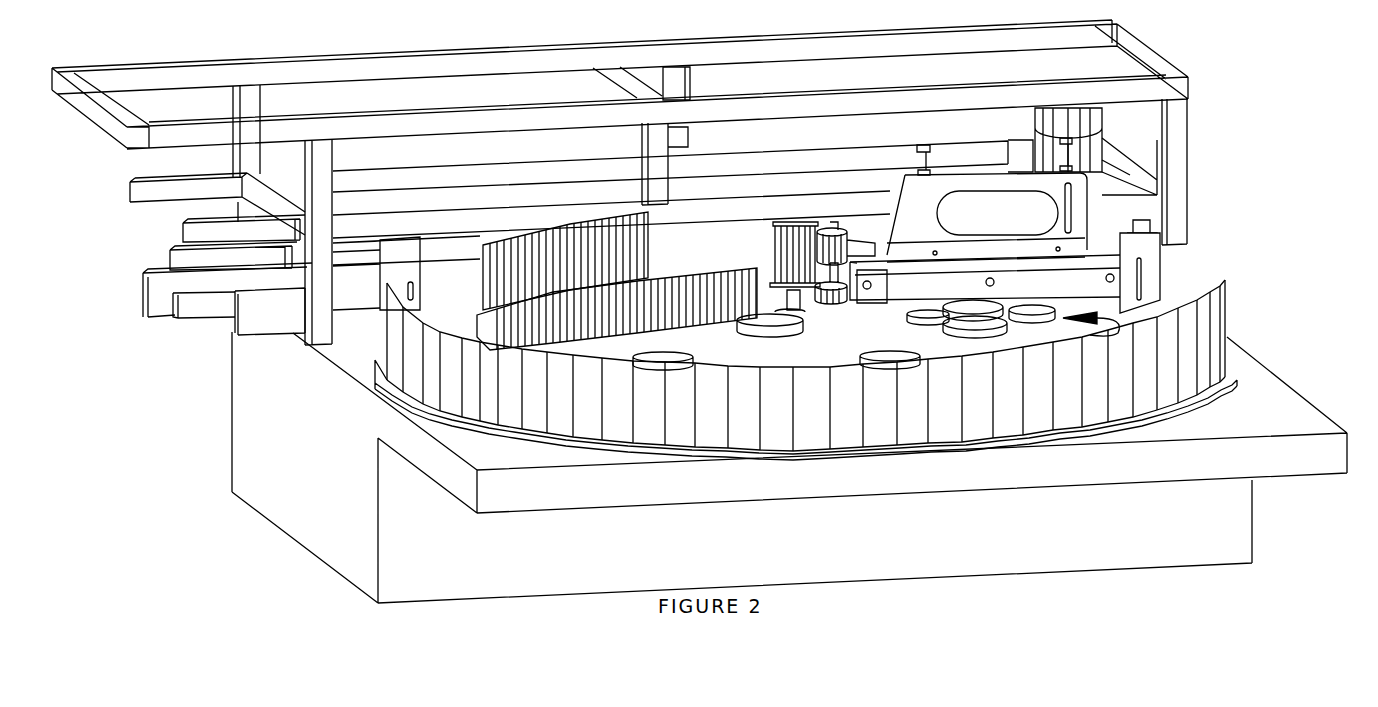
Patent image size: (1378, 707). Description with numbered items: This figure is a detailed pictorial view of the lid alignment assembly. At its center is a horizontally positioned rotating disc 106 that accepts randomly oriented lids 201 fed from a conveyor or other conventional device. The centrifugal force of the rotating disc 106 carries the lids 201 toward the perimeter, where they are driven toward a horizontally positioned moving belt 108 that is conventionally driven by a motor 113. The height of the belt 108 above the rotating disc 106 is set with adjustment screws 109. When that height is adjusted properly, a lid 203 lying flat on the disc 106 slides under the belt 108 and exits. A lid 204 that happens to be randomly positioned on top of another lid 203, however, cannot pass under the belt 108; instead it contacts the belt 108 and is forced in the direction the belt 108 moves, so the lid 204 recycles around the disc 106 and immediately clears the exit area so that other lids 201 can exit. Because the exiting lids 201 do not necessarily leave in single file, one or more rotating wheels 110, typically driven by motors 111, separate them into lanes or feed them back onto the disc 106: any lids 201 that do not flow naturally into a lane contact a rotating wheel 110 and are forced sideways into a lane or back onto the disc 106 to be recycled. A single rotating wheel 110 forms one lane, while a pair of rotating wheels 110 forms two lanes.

The rotating disc 106 is at (613, 287).
The moving belt 108 is at (1118, 293).
The adjustment screws 109 is at (1068, 137).
The rotating wheel 110 is at (762, 325).
The motor 111 is at (795, 248).
The motor 113 is at (1090, 152).
The lids 201 is at (690, 340).
The lid 203 is at (930, 307).
The lid 204 is at (970, 307).